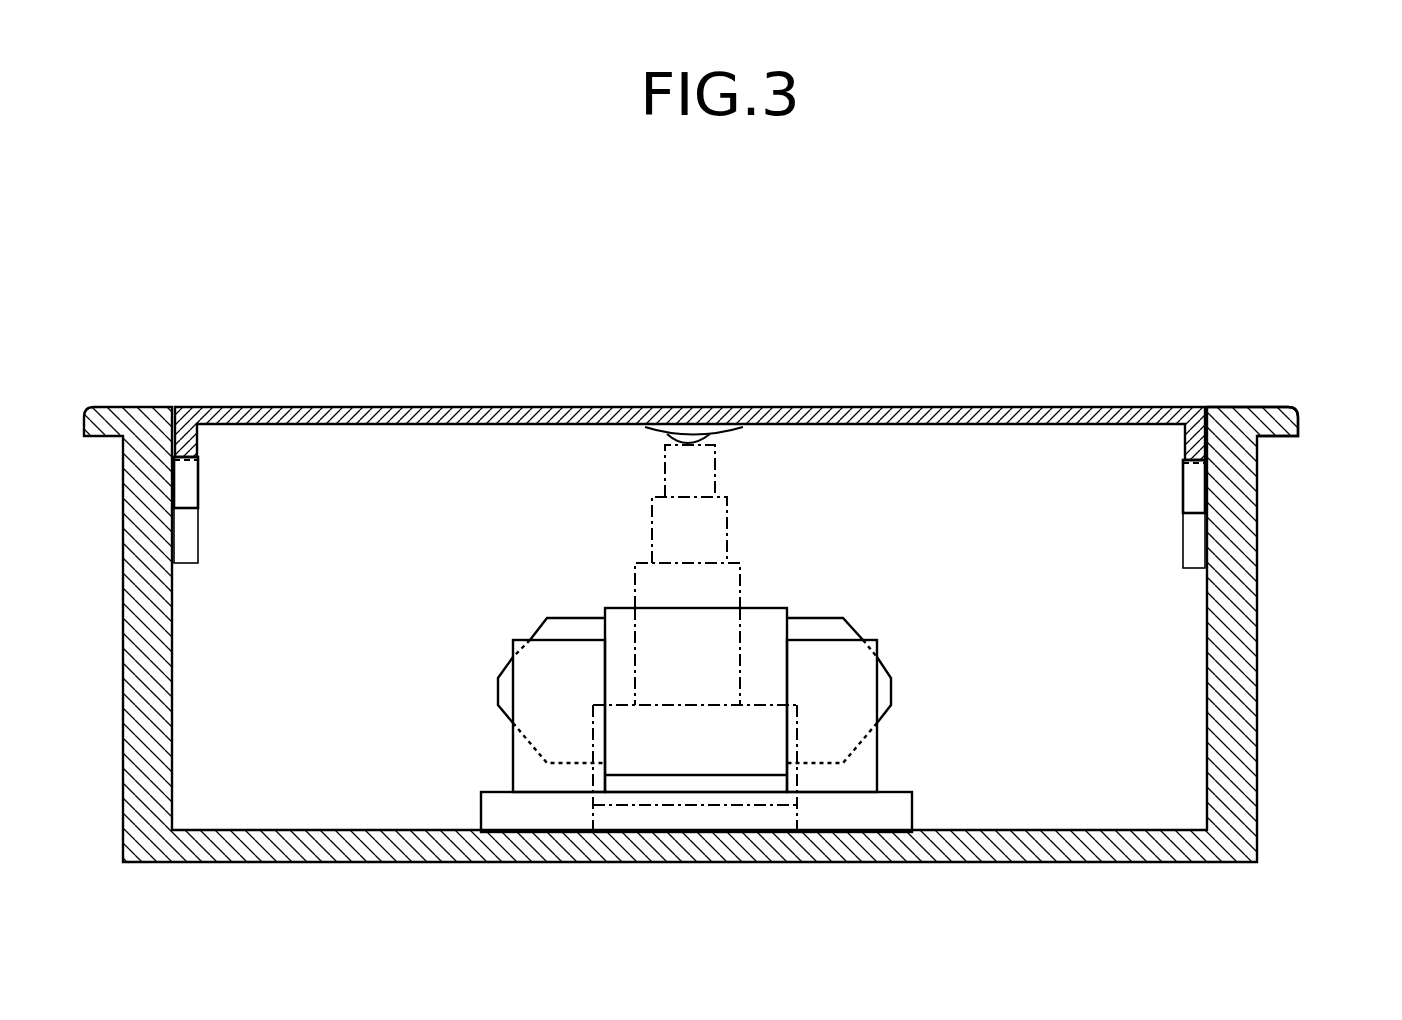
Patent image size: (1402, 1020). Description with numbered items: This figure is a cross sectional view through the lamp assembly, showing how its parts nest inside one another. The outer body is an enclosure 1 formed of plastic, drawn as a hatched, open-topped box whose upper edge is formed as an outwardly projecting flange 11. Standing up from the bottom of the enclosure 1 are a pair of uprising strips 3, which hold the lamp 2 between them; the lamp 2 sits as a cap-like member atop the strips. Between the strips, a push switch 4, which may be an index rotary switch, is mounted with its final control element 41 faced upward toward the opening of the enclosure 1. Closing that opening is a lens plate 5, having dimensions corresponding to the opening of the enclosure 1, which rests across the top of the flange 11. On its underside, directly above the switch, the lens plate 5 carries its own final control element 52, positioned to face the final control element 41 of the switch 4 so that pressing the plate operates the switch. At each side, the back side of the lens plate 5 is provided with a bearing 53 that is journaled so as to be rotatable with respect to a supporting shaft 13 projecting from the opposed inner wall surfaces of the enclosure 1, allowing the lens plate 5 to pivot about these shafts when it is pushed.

The enclosure 1 is at (1282, 655).
The flange 11 is at (1278, 408).
The lens plate 5 is at (941, 407).
The final control element 52 is at (694, 407).
The bearing 53 is at (1197, 545).
The supporting shaft 13 is at (1190, 487).
The final control element 41 is at (712, 470).
The push switch 4 is at (745, 590).
The uprising strips 3 is at (840, 693).
The lamp 2 is at (570, 623).